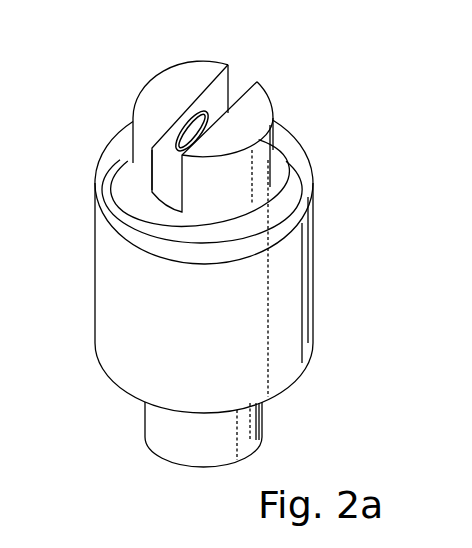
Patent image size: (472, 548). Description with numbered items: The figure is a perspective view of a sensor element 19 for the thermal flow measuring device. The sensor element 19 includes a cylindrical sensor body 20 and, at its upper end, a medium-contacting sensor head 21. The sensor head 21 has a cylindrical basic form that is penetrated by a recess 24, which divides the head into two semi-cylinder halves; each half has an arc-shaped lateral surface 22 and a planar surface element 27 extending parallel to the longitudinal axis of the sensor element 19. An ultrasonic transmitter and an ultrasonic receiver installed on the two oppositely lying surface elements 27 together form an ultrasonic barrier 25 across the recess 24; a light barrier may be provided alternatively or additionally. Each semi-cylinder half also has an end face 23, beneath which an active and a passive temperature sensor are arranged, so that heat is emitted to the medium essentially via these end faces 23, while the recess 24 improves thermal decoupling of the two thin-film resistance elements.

The sensor element 19 is at (225, 241).
The cylindrical sensor body 20 is at (298, 290).
The sensor head 21 is at (260, 165).
The lateral surface 22 is at (130, 149).
The end face 23 is at (162, 90).
The recess 24 is at (158, 195).
The ultrasonic barrier 25 is at (197, 127).
The surface element 27 is at (152, 162).